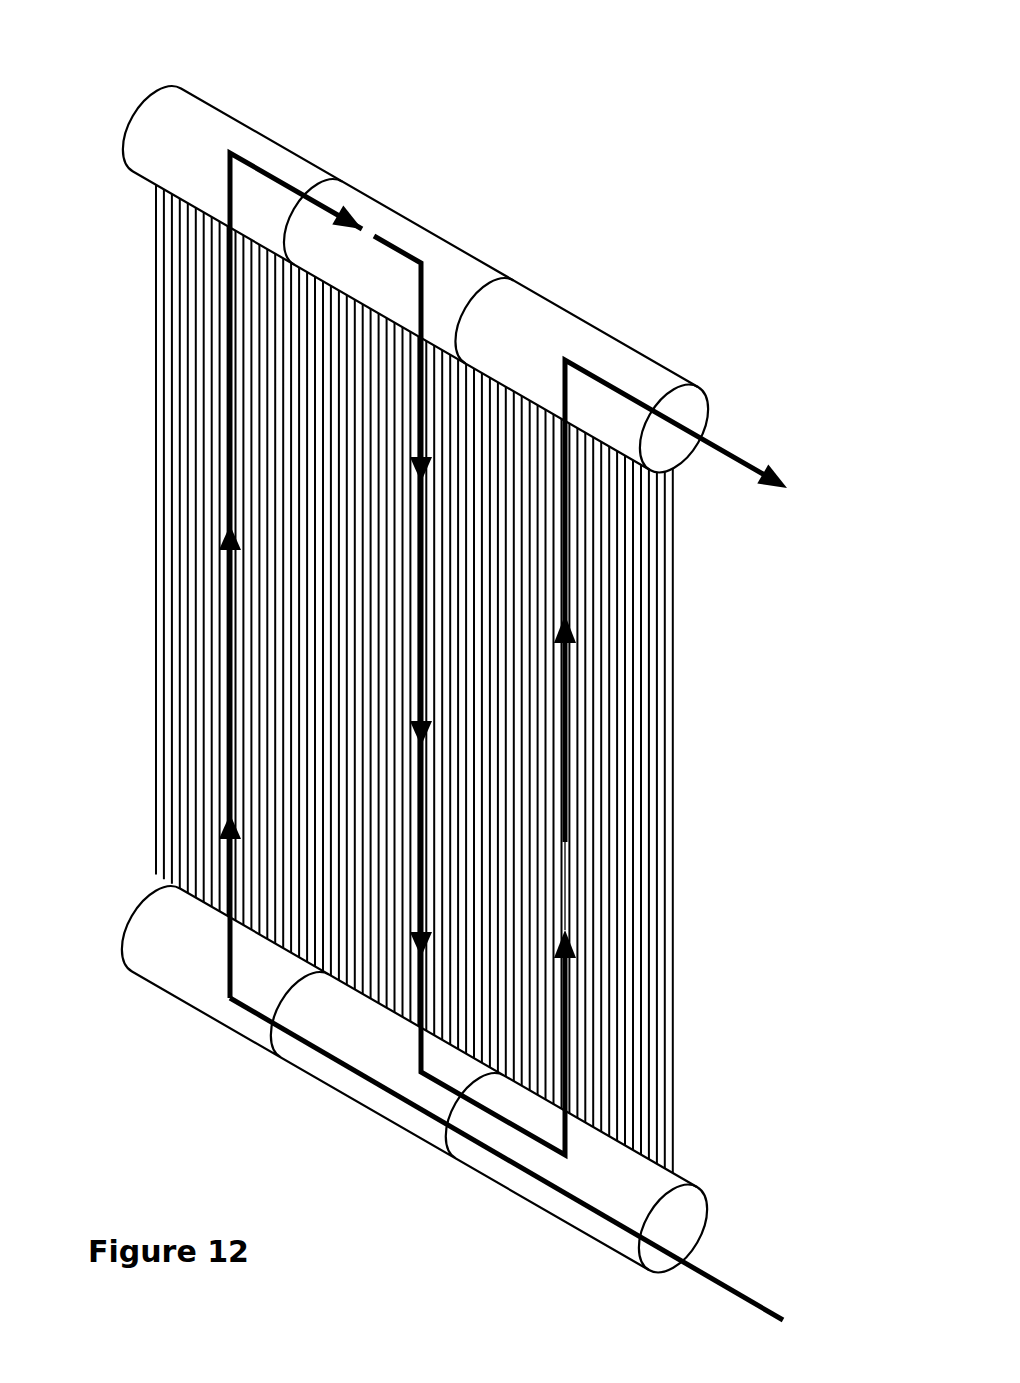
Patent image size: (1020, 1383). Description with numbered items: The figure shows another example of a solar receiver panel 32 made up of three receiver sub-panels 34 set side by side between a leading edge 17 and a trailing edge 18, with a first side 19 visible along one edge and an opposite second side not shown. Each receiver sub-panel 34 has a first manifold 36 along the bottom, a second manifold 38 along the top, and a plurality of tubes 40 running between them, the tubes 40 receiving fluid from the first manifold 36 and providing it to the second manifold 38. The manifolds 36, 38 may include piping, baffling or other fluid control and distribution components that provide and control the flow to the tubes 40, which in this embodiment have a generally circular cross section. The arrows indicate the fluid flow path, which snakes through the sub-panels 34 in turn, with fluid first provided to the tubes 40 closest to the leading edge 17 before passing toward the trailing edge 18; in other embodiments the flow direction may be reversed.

The panel 32 is at (434, 683).
The receiver sub-panel 34 is at (496, 325).
The first manifold 36 is at (170, 983).
The second manifold 38 is at (416, 253).
The tubes 40 is at (407, 679).
The leading edge 17 is at (155, 702).
The trailing edge 18 is at (673, 835).
The first side 19 is at (202, 795).